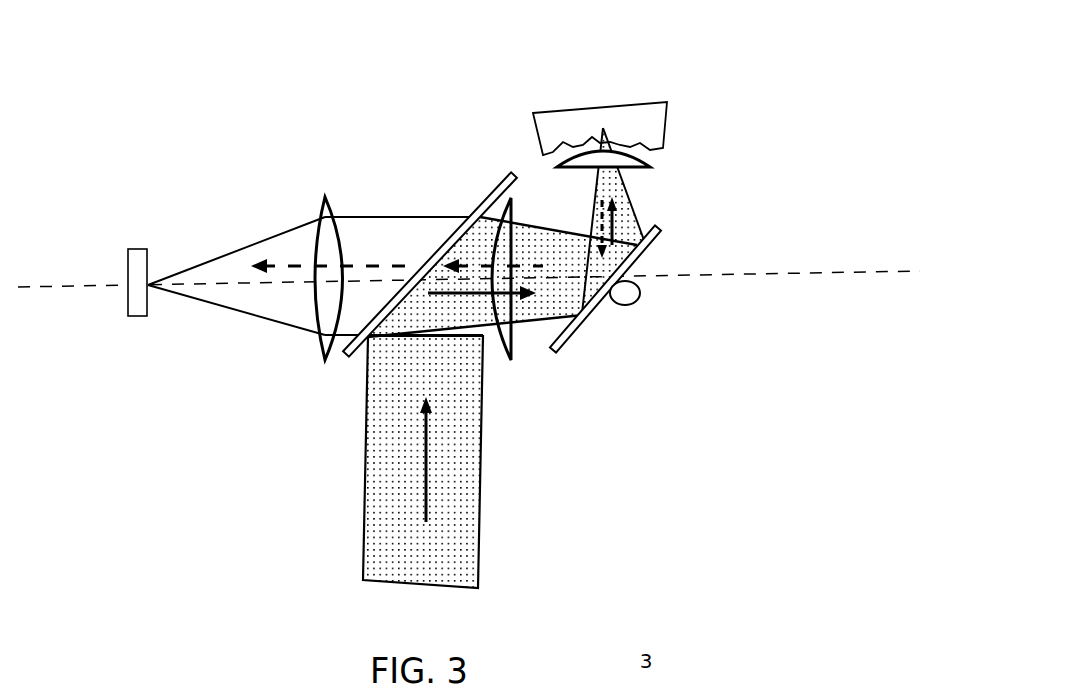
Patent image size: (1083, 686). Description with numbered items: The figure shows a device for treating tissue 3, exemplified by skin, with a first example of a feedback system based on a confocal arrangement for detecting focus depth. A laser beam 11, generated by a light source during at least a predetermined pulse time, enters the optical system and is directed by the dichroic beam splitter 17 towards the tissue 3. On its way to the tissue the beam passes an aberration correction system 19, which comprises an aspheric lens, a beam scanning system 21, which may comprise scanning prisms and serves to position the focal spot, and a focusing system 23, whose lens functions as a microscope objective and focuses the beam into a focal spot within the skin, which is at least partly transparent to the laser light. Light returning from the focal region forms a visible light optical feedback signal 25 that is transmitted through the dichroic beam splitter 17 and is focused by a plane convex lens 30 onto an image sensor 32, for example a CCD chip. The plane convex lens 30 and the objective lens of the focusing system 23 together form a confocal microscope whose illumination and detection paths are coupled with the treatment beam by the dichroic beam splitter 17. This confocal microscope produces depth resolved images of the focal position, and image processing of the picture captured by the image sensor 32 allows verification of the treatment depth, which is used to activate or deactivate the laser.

The tissue 3 is at (613, 105).
The laser beam 11 is at (467, 537).
The dichroic beam splitter 17 is at (475, 212).
The aberration correction system 19 is at (515, 343).
The beam scanning system 21 is at (578, 333).
The focusing system 23 is at (648, 167).
The visible light optical feedback signal 25 is at (395, 233).
The plane convex lens 30 is at (318, 220).
The image sensor 32 is at (128, 282).